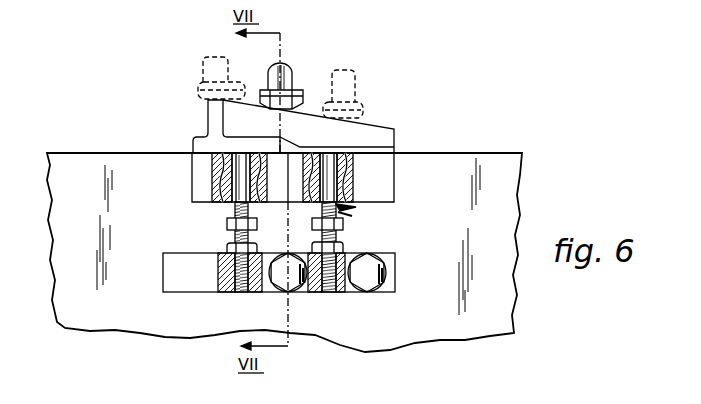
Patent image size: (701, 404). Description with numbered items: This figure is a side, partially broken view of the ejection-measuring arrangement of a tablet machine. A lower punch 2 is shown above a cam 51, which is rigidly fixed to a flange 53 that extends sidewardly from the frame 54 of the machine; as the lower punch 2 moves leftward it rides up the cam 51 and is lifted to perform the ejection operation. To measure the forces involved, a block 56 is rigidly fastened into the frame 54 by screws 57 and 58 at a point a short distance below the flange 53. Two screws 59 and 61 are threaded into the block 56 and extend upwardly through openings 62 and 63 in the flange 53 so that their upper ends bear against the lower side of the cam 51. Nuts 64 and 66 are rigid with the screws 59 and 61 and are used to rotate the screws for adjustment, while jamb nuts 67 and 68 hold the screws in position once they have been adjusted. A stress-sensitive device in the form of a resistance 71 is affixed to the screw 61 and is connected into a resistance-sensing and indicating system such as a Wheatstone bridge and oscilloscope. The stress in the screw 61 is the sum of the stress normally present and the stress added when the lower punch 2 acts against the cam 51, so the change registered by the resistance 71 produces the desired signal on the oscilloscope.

The lower punch 2 is at (295, 73).
The cam 51 is at (370, 124).
The flange 53 is at (395, 176).
The frame 54 is at (440, 160).
The block 56 is at (396, 263).
The screw 57 is at (366, 292).
The screw 58 is at (298, 292).
The screw 59 is at (233, 209).
The screw 61 is at (338, 240).
The opening 62 is at (232, 170).
The opening 63 is at (303, 180).
The nut 64 is at (227, 226).
The nut 66 is at (312, 226).
The jamb nut 67 is at (227, 248).
The jamb nut 68 is at (344, 250).
The resistance 71 is at (345, 210).